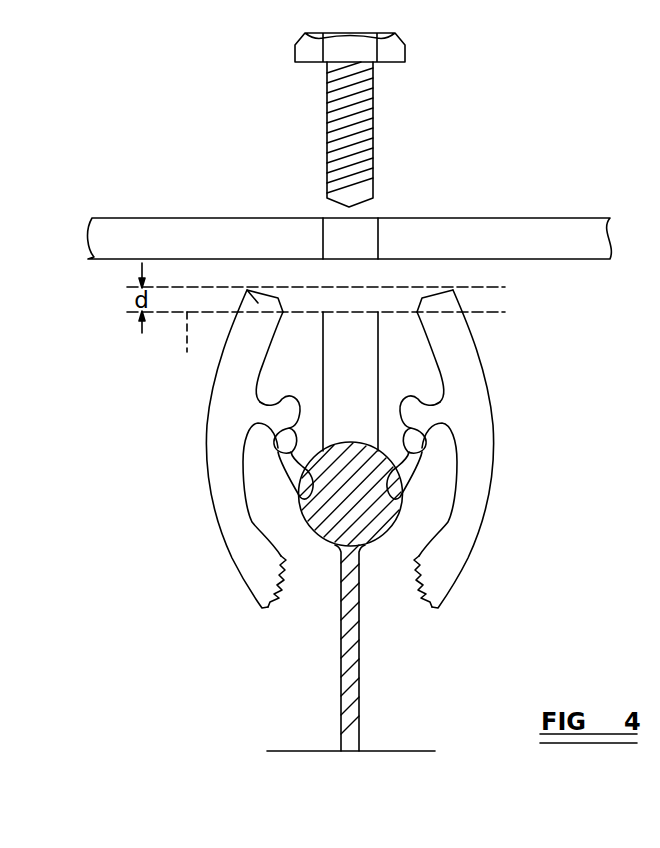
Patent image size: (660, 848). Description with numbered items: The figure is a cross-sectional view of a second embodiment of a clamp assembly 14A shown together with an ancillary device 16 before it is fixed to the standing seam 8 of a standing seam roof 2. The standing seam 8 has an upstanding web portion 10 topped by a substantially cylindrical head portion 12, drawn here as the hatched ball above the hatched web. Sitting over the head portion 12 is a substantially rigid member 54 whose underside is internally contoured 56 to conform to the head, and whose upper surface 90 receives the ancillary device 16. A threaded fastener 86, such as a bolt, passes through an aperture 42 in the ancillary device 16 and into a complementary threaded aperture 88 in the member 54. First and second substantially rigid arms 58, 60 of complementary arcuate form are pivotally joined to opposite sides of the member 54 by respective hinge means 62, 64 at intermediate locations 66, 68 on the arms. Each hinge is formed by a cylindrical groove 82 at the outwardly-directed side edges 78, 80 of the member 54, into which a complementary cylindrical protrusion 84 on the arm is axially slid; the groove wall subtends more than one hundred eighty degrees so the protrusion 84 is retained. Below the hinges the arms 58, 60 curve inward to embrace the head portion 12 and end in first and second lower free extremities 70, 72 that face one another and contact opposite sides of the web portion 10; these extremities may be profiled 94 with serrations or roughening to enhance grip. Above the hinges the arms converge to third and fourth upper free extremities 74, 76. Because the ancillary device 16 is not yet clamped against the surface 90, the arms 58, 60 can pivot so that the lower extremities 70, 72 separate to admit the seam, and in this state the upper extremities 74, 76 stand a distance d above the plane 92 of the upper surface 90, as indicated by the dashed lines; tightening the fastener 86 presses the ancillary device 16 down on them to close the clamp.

The standing seam roof 2 is at (389, 745).
The standing seam 8 is at (336, 637).
The web portion 10 is at (359, 647).
The head portion 12 is at (352, 507).
The clamp assembly 14A is at (536, 448).
The ancillary device 16 is at (542, 237).
The aperture 42 is at (353, 233).
The substantially rigid member 54 is at (417, 373).
The internal contour 56 is at (340, 477).
The first substantially rigid arm 58 is at (195, 417).
The second substantially rigid arm 60 is at (508, 387).
The hinge means 62 is at (290, 392).
The hinge means 64 is at (411, 388).
The intermediate location 66 is at (237, 413).
The intermediate location 68 is at (453, 413).
The first lower free extremity 70 is at (260, 570).
The second lower free extremity 72 is at (430, 577).
The third upper free extremity 74 is at (247, 290).
The fourth upper free extremity 76 is at (443, 302).
The opposite side edge 78 is at (328, 446).
The opposite side edge 80 is at (395, 485).
The groove 82 is at (272, 437).
The protrusion 84 is at (288, 413).
The threaded fastener 86 is at (373, 120).
The threaded aperture 88 is at (312, 292).
The upper surface 90 is at (348, 367).
The plane 92 is at (187, 350).
The profiling 94 is at (280, 597).